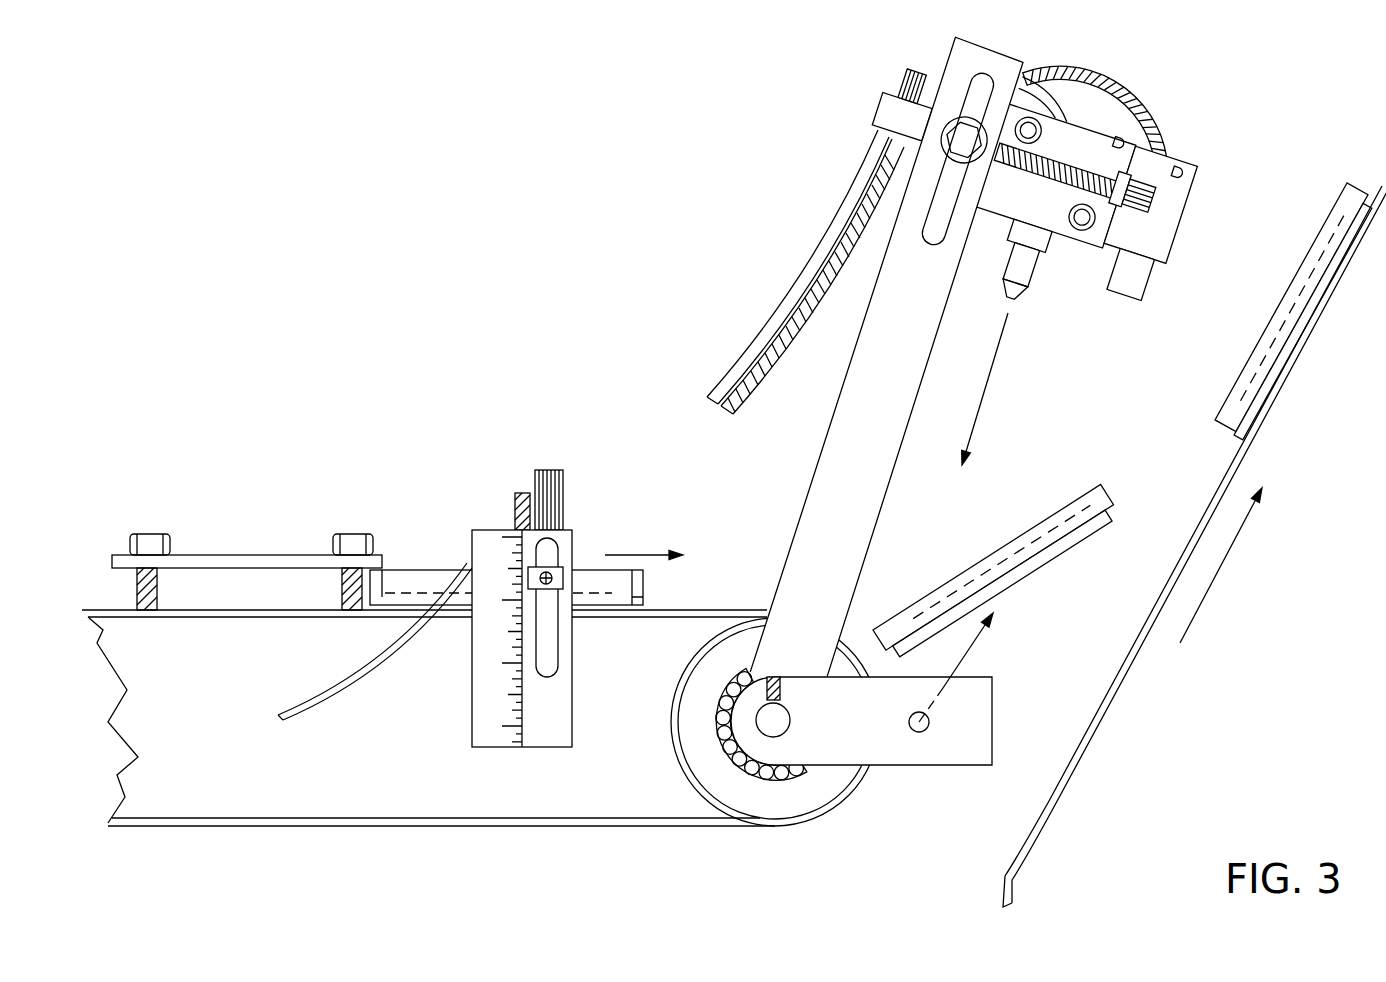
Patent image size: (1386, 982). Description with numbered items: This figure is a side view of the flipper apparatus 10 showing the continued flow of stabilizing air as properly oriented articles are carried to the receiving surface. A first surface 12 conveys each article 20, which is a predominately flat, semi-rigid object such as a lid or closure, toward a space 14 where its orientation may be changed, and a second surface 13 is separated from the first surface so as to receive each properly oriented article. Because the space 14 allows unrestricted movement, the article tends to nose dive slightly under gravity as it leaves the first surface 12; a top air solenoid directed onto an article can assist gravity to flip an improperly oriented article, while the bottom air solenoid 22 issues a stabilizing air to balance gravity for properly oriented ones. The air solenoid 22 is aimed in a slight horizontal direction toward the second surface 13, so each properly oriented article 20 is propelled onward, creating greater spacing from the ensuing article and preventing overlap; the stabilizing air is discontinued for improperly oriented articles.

The flipper apparatus 10 is at (547, 130).
The first surface 12 is at (97, 608).
The second surface 13 is at (1112, 689).
The space 14 is at (1053, 622).
The articles 20 is at (1340, 200).
The bottom air solenoid 22 is at (923, 730).